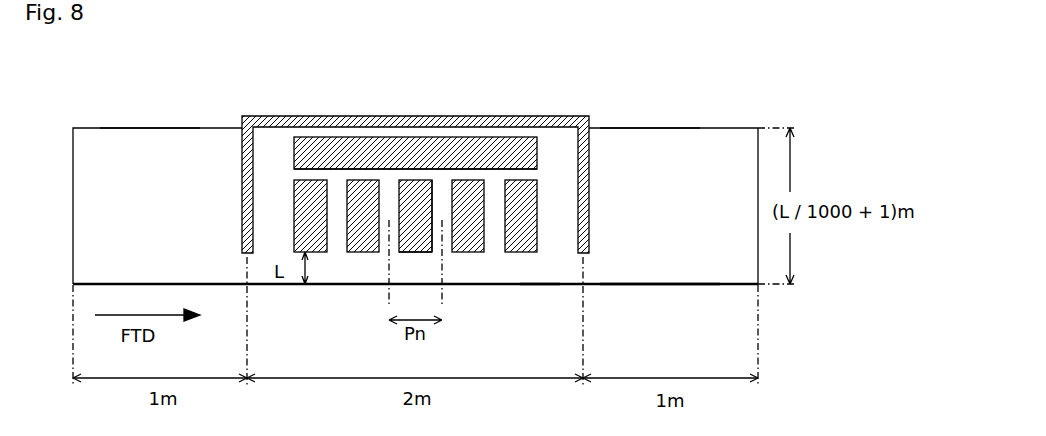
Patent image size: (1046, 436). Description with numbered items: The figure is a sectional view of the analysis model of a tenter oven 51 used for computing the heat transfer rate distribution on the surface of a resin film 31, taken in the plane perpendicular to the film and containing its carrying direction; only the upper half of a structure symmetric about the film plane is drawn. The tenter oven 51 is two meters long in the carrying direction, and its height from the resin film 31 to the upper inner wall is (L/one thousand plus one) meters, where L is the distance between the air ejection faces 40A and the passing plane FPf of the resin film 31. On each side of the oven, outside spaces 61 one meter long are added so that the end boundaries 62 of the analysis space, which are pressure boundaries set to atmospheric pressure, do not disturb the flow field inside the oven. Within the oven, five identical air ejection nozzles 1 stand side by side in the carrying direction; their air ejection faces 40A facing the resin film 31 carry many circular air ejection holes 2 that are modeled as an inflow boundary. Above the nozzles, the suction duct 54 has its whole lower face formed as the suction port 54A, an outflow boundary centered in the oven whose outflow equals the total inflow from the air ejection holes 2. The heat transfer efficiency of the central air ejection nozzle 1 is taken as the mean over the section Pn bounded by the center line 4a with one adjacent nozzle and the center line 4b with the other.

The end boundaries of the analysis space 62 is at (73, 168).
The outside spaces 61 is at (161, 138).
The resin film 31 is at (652, 285).
The tenter oven 51 is at (265, 103).
The suction duct 54 is at (400, 148).
The suction port 54A is at (362, 168).
The air ejection nozzle 1 is at (410, 200).
The air ejection holes 2 is at (418, 250).
The air ejection faces 40A is at (422, 252).
The center line with adjacent air ejection nozzle 4a is at (388, 307).
The center line with adjacent air ejection nozzle 4b is at (443, 307).
The passing plane of the resin film FPf is at (538, 285).